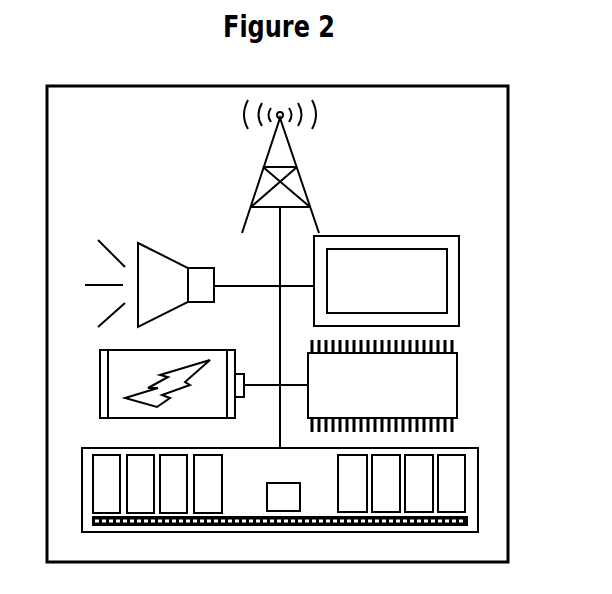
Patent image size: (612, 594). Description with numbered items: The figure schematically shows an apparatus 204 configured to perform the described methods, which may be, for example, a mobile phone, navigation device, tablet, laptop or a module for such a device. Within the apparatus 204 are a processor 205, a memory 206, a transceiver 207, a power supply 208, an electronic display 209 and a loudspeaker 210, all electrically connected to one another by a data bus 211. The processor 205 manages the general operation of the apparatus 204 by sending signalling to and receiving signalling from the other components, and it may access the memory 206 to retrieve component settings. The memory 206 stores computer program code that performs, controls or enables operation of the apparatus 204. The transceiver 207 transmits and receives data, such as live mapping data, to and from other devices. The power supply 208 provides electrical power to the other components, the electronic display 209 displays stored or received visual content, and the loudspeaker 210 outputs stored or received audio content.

The apparatus 204 is at (277, 324).
The processor 205 is at (382, 386).
The memory 206 is at (280, 490).
The transceiver 207 is at (262, 176).
The power supply 208 is at (172, 384).
The electronic display 209 is at (386, 281).
The loudspeaker 210 is at (149, 283).
The data bus 211 is at (276, 245).